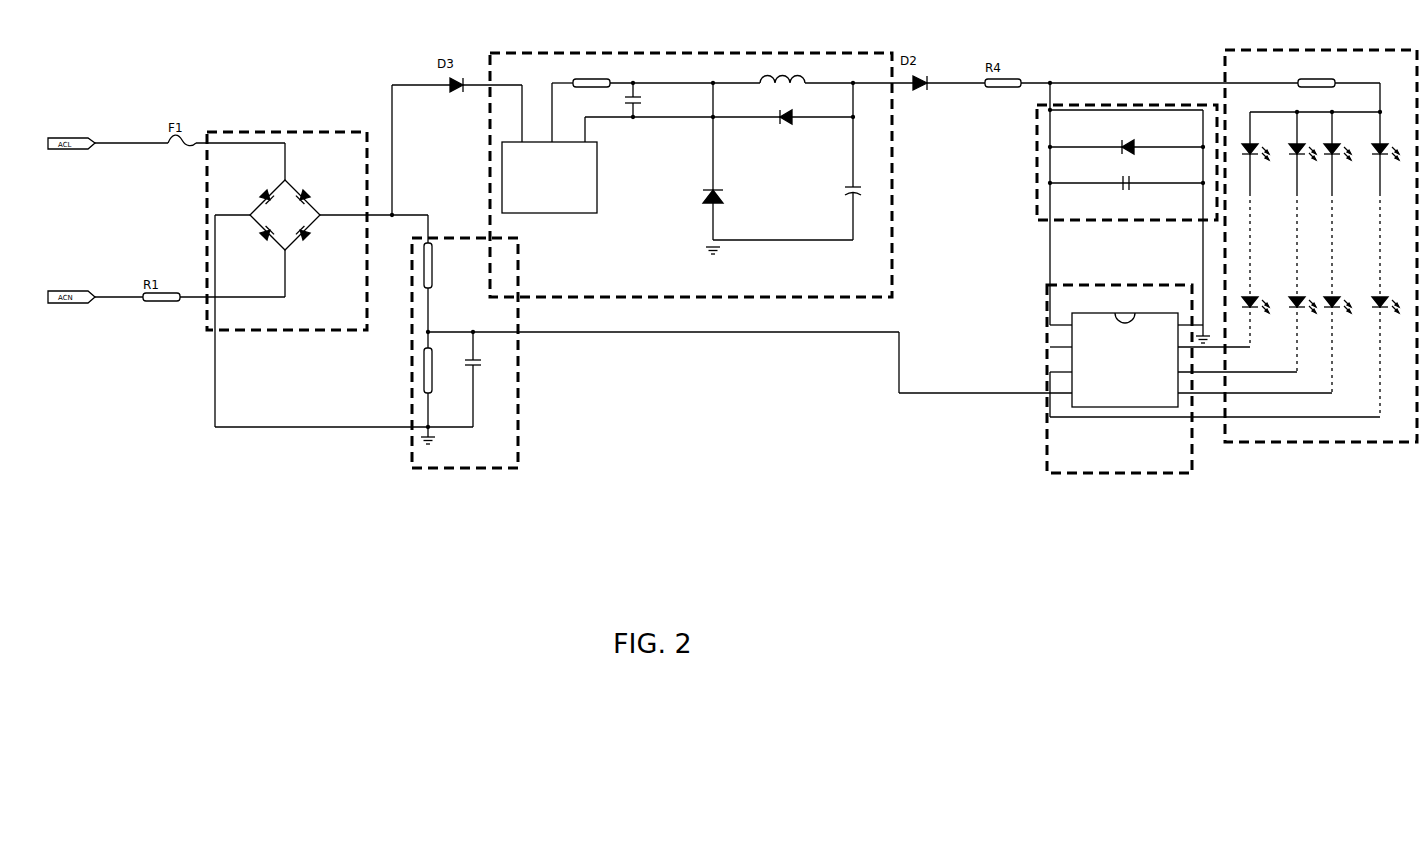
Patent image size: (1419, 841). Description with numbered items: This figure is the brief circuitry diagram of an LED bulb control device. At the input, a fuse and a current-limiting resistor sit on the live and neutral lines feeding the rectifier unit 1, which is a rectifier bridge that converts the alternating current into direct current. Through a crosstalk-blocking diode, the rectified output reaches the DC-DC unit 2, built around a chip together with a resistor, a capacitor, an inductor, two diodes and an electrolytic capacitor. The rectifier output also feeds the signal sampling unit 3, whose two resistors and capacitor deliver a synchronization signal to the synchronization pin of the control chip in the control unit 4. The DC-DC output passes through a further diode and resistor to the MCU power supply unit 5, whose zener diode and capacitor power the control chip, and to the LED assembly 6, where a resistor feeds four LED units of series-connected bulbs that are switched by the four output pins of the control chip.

The rectifier unit 1 is at (286, 330).
The DC-DC unit 2 is at (890, 225).
The signal sampling unit 3 is at (480, 468).
The control unit 4 is at (1118, 473).
The MCU power supply unit 5 is at (1140, 105).
The LED assembly 6 is at (1317, 442).